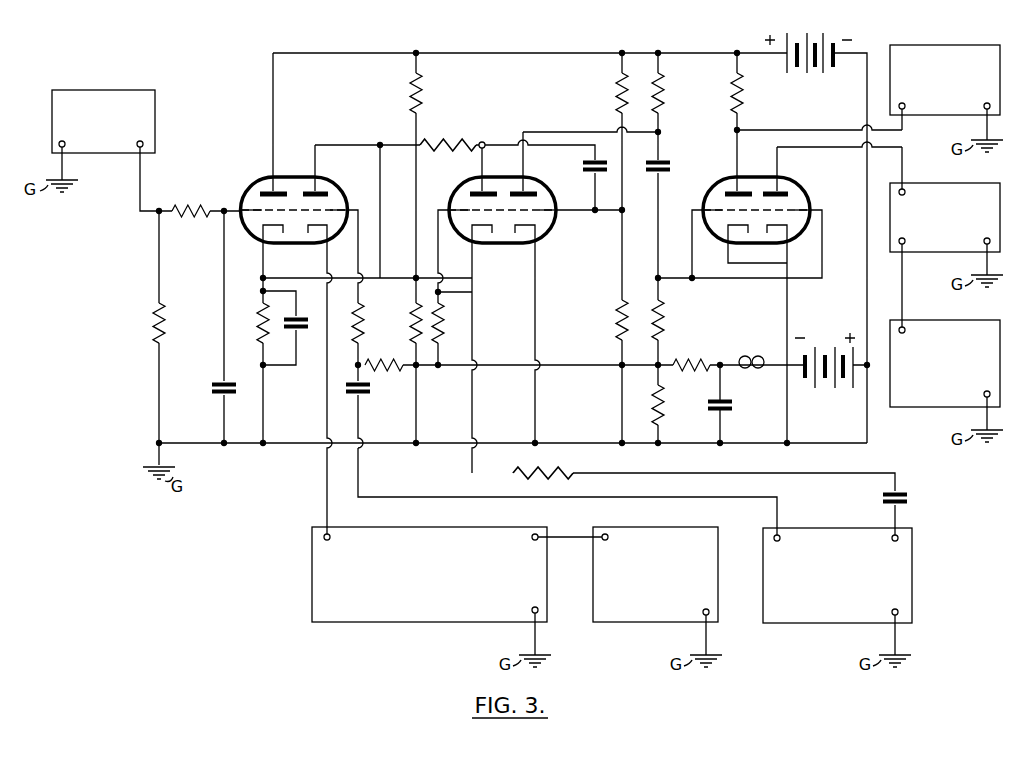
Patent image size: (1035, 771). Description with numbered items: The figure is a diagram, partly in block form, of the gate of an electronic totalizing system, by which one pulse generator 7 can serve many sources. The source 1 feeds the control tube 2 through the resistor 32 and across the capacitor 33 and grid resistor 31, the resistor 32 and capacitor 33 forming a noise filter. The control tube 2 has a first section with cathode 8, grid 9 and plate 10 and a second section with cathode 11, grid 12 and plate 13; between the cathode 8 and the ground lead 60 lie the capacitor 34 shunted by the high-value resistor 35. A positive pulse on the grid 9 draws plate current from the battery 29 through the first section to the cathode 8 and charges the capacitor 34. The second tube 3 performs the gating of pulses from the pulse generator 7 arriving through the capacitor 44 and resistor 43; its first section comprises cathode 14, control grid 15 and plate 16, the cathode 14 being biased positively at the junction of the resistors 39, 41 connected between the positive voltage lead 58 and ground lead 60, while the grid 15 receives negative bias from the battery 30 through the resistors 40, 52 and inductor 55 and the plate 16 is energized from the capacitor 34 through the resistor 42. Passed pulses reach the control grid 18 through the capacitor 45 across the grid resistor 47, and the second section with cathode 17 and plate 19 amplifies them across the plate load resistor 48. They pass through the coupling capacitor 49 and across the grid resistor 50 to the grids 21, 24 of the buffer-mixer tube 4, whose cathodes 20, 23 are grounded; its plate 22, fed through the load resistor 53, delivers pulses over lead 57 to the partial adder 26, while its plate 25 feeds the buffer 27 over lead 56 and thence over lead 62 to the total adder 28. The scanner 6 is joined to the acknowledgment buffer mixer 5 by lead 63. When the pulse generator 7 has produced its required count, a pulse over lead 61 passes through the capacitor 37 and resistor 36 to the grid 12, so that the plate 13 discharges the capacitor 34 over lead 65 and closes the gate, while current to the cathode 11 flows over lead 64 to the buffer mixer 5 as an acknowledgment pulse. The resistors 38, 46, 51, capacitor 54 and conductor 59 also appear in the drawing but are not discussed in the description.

The source 1 is at (93, 92).
The control tube 2 is at (298, 204).
The second tube 3 is at (503, 204).
The buffer-mixer tube 4 is at (759, 204).
The acknowledgment buffer mixer 5 is at (427, 622).
The scanner 6 is at (650, 622).
The pulse generator 7 is at (826, 623).
The cathode 8 is at (262, 236).
The grid 9 is at (257, 208).
The plate 10 is at (268, 189).
The cathode 11 is at (329, 236).
The grid 12 is at (334, 208).
The plate 13 is at (318, 189).
The cathode 14 is at (468, 236).
The control grid 15 is at (460, 208).
The plate 16 is at (470, 188).
The cathode 17 is at (536, 236).
The control grid 18 is at (538, 213).
The plate 19 is at (540, 200).
The cathode 20 is at (724, 236).
The grid 21 is at (718, 208).
The plate 22 is at (730, 189).
The cathode 23 is at (788, 236).
The grid 24 is at (800, 208).
The plate 25 is at (780, 189).
The partial adder 26 is at (937, 115).
The buffer 27 is at (942, 183).
The total adder 28 is at (940, 320).
The battery 29 is at (807, 75).
The battery 30 is at (817, 390).
The grid resistor 31 is at (156, 313).
The resistor 32 is at (184, 218).
The capacitor 33 is at (233, 393).
The capacitor 34 is at (301, 318).
The resistor 35 is at (258, 313).
The resistor 36 is at (365, 334).
The capacitor 37 is at (363, 393).
The resistor 38 is at (382, 370).
The resistor 39 is at (410, 325).
The resistor 40 is at (442, 331).
The resistor 41 is at (423, 101).
The resistor 42 is at (443, 142).
The resistor 43 is at (531, 472).
The capacitor 44 is at (905, 501).
The capacitor 45 is at (586, 166).
The resistor 46 is at (615, 101).
The grid resistor 47 is at (617, 329).
The plate load resistor 48 is at (665, 101).
The coupling capacitor 49 is at (664, 165).
The grid resistor 50 is at (665, 329).
The resistor 51 is at (665, 420).
The resistor 52 is at (678, 362).
The load resistor 53 is at (746, 101).
The capacitor 54 is at (728, 411).
The inductor 55 is at (743, 359).
The lead 56 is at (831, 148).
The lead 57 is at (786, 130).
The positive voltage lead 58 is at (545, 54).
The conductor 59 is at (555, 365).
The ground lead 60 is at (280, 444).
The lead 61 is at (780, 522).
The lead 62 is at (902, 291).
The lead 63 is at (565, 537).
The lead 64 is at (327, 490).
The lead 65 is at (382, 220).